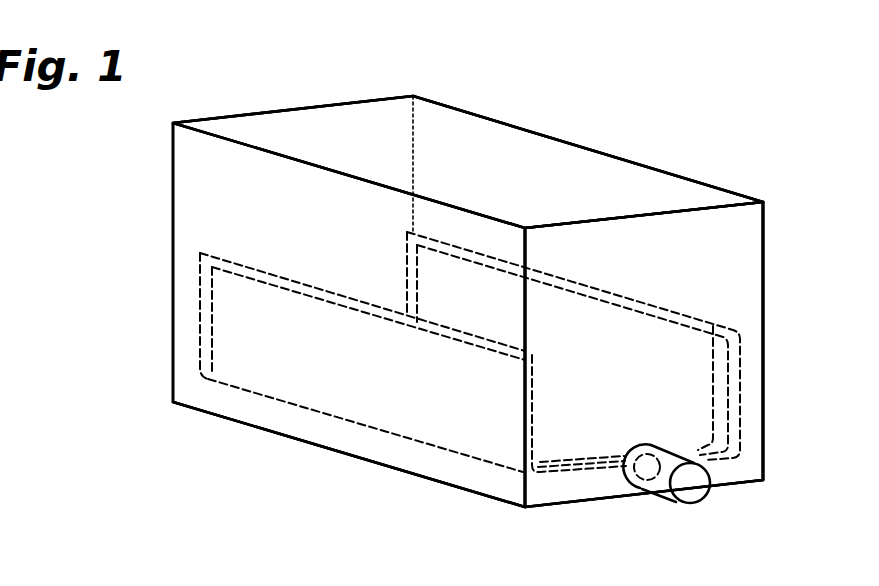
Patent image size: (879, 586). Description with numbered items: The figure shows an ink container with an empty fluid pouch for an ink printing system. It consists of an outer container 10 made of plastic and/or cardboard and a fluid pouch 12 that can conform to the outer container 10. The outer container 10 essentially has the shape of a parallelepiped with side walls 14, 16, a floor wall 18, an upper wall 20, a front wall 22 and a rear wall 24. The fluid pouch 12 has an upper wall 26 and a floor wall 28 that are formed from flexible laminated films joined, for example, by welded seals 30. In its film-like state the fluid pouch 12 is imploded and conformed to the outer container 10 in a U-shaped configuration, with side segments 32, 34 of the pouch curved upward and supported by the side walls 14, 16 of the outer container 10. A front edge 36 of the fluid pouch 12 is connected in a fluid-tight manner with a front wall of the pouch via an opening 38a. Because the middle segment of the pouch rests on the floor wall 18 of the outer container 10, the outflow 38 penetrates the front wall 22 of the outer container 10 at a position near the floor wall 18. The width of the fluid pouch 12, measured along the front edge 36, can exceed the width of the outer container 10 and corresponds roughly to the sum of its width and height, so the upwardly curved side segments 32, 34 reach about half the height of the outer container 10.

The outer container 10 is at (575, 131).
The fluid pouch 12 is at (645, 291).
The side wall 14 is at (460, 126).
The side wall 16 is at (198, 217).
The floor wall 18 is at (367, 443).
The upper wall 20 is at (332, 124).
The front wall 22 is at (742, 255).
The rear wall 24 is at (253, 123).
The upper wall 26 is at (570, 327).
The floor wall 28 is at (442, 425).
The welded seal 30 is at (360, 307).
The side segment 32 is at (682, 311).
The side segment 34 is at (225, 307).
The front edge 36 is at (577, 478).
The outflow 38 is at (697, 495).
The opening 38a is at (650, 490).